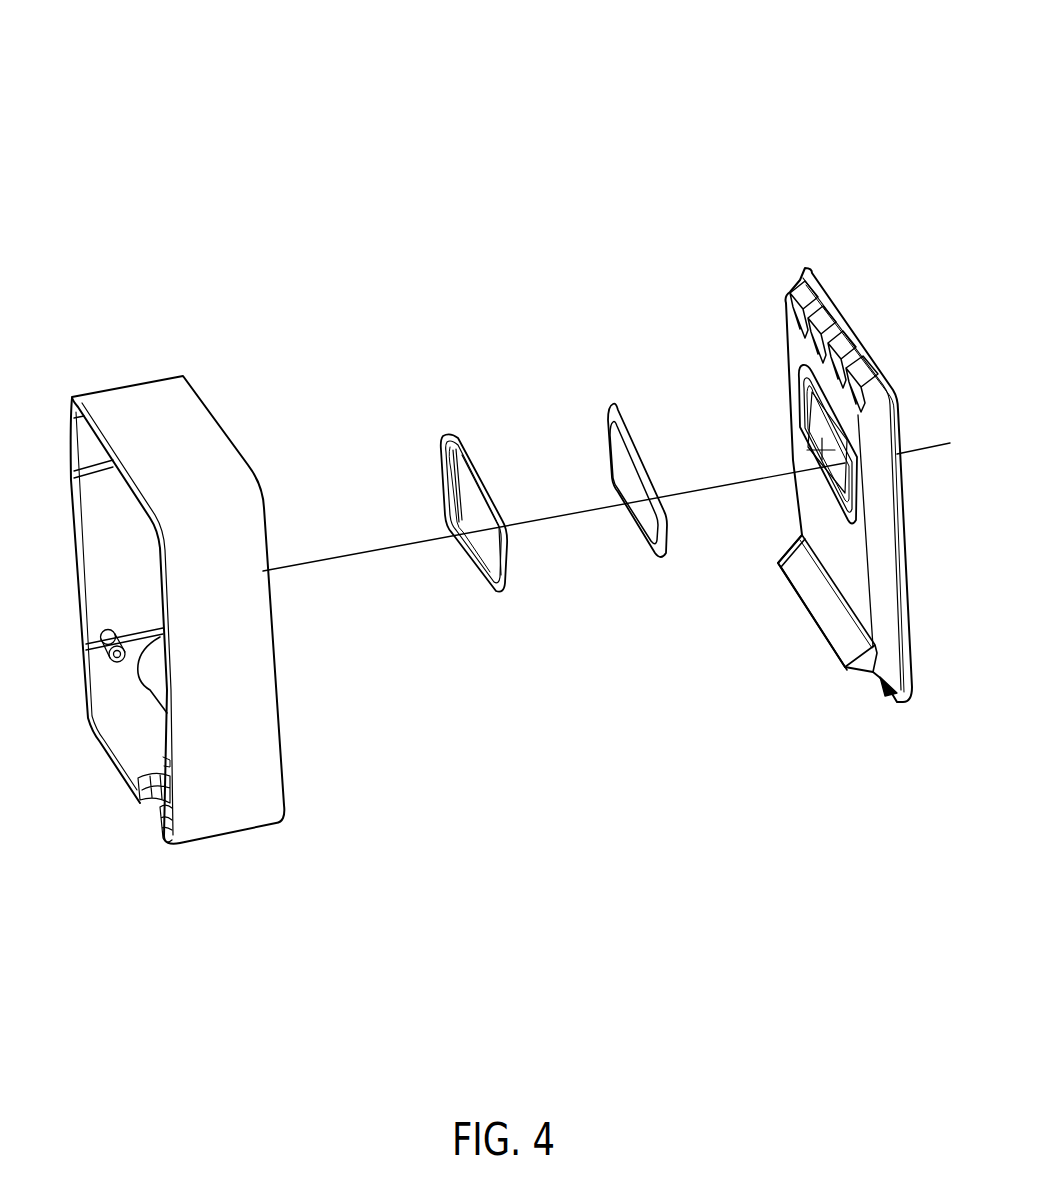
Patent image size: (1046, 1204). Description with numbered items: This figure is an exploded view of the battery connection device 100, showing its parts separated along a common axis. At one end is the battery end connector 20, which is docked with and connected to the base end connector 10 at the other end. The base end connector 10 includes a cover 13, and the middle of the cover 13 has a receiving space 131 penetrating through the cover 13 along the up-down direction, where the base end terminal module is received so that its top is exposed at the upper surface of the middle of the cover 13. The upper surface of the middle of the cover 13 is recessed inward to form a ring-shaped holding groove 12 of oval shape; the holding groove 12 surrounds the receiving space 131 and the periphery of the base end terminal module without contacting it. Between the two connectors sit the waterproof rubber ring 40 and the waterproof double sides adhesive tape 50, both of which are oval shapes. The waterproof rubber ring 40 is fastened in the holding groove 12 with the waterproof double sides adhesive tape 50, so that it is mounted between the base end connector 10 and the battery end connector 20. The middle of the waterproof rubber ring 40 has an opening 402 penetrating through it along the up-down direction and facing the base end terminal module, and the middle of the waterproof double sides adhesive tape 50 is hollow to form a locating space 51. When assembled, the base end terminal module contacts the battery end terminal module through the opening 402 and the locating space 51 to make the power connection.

The battery connection device 100 is at (105, 72).
The base end connector 10 is at (743, 305).
The holding groove 12 is at (800, 391).
The receiving space 131 is at (800, 424).
The cover 13 is at (837, 538).
The battery end connector 20 is at (203, 897).
The waterproof rubber ring 40 is at (447, 488).
The opening 402 is at (488, 545).
The waterproof double sides adhesive tape 50 is at (610, 416).
The locating space 51 is at (625, 481).